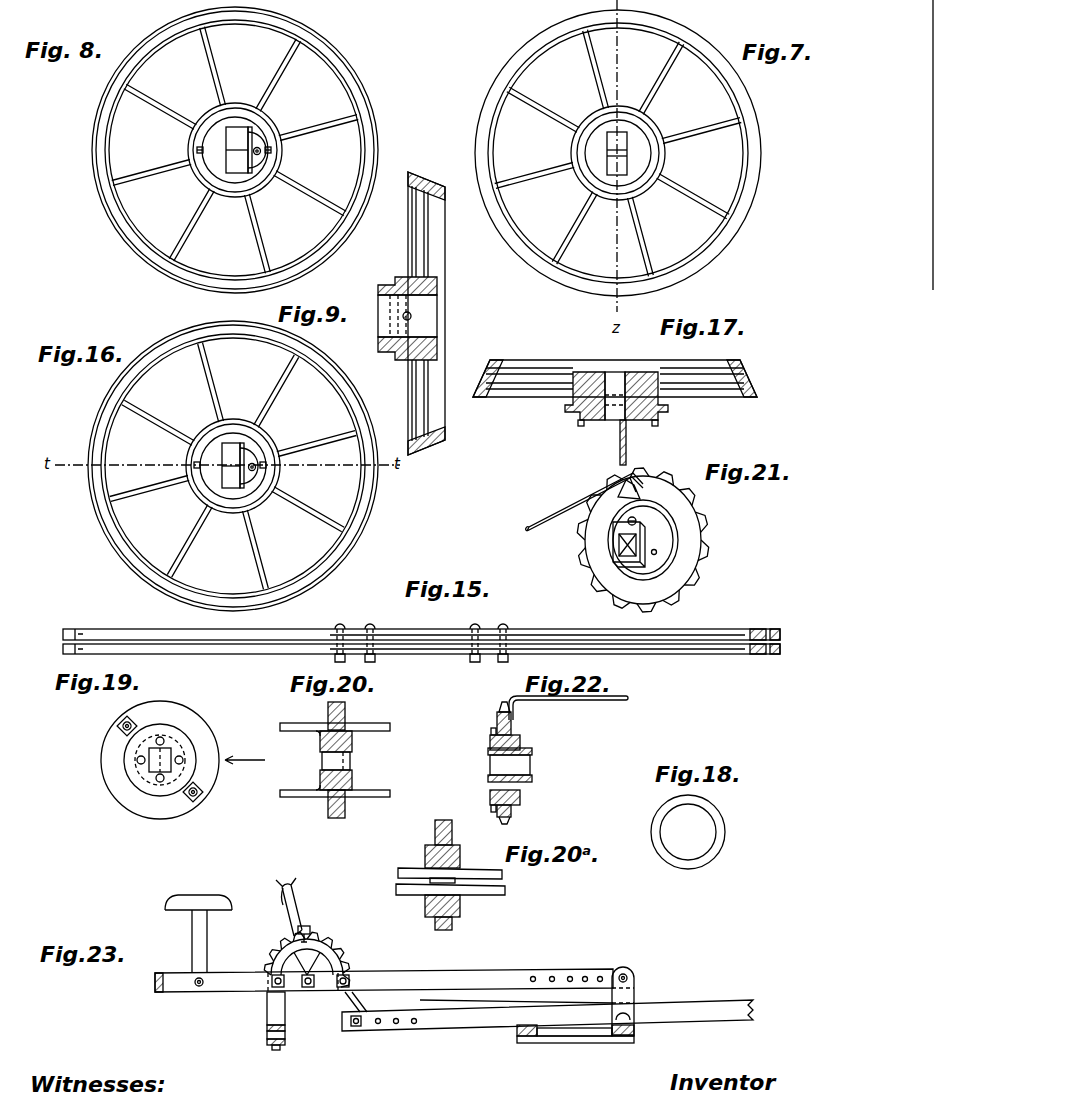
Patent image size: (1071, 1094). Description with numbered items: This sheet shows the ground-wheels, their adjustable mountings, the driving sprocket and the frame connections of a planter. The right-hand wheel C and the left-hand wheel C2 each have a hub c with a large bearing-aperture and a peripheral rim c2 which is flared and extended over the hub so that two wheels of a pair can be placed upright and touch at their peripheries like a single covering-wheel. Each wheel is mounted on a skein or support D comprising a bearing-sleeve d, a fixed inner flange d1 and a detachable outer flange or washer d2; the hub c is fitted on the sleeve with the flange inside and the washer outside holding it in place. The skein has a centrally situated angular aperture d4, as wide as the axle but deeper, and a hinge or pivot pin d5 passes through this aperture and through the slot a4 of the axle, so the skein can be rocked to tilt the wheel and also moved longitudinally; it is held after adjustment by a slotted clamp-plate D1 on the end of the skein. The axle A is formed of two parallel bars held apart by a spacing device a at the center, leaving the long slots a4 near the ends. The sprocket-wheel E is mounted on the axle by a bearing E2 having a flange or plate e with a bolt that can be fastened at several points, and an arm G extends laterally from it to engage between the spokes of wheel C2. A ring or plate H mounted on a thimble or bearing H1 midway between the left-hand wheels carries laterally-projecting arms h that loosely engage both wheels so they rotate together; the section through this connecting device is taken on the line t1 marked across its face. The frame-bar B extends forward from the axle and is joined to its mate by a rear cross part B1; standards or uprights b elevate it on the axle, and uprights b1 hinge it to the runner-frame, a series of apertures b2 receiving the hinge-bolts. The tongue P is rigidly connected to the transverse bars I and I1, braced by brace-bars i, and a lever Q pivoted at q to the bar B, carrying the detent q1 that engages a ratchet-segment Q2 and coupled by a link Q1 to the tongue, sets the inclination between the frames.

In FIG. 8, the right-hand wheel C is at (239, 150).
In FIG. 7, the right-hand wheel C is at (622, 153).
In FIG. 9, the right-hand wheel C is at (426, 304).
In FIG. 8, the hub c is at (196, 167).
In FIG. 7, the hub c is at (583, 180).
In FIG. 16, the hub c is at (200, 490).
In FIG. 9, the hub c is at (397, 367).
In FIG. 17, the hub c is at (615, 390).
In FIG. 8, the peripheral rim c2 is at (261, 190).
In FIG. 7, the peripheral rim c2 is at (648, 192).
In FIG. 16, the peripheral rim c2 is at (278, 480).
In FIG. 17, the peripheral rim c2 is at (663, 397).
In FIG. 16, the left-hand wheel C2 is at (236, 466).
In FIG. 8, the skein or support D is at (229, 174).
In FIG. 7, the skein or support D is at (608, 182).
In FIG. 16, the skein or support D is at (227, 493).
In FIG. 17, the skein or support D is at (603, 421).
In FIG. 8, the slotted clamp-plate D1 is at (250, 163).
In FIG. 16, the slotted clamp-plate D1 is at (237, 450).
In FIG. 17, the slotted clamp-plate D1 is at (628, 456).
In FIG. 9, the bearing-sleeve d is at (379, 298).
In FIG. 9, the fixed inner flange d1 is at (390, 341).
In FIG. 17, the fixed inner flange d1 is at (585, 372).
In FIG. 8, the detachable outer flange or washer d2 is at (200, 149).
In FIG. 16, the detachable outer flange or washer d2 is at (200, 447).
In FIG. 9, the detachable outer flange or washer d2 is at (395, 353).
In FIG. 17, the detachable outer flange or washer d2 is at (573, 410).
In FIG. 18, the detachable outer flange or washer d2 is at (688, 836).
In FIG. 8, the angular aperture d4 is at (253, 130).
In FIG. 7, the angular aperture d4 is at (607, 140).
In FIG. 16, the angular aperture d4 is at (245, 447).
In FIG. 9, the angular aperture d4 is at (386, 320).
In FIG. 17, the angular aperture d4 is at (613, 421).
In FIG. 8, the hinge or pivot pin d5 is at (232, 147).
In FIG. 7, the hinge or pivot pin d5 is at (625, 153).
In FIG. 16, the hinge or pivot pin d5 is at (230, 443).
In FIG. 9, the hinge or pivot pin d5 is at (411, 317).
In FIG. 17, the hinge or pivot pin d5 is at (613, 392).
In FIG. 21, the sprocket-wheel E is at (690, 503).
In FIG. 22, the sprocket-wheel E is at (520, 724).
In FIG. 21, the flange or plate e is at (613, 540).
In FIG. 22, the flange or plate e is at (532, 756).
In FIG. 22, the bearing E2 is at (527, 770).
In FIG. 21, the arm G is at (527, 529).
In FIG. 22, the arm G is at (628, 700).
In FIG. 15, the axle A is at (421, 630).
In FIG. 23, the axle A is at (254, 1058).
In FIG. 15, the spacing device a is at (438, 654).
In FIG. 15, the slot or passage-way a4 is at (243, 641).
In FIG. 23, the slot or passage-way a4 is at (286, 1036).
In FIG. 19, the ring or plate H is at (110, 746).
In FIG. 20, the ring or plate H is at (345, 808).
In FIG. 20A, the ring or plate H is at (453, 833).
In FIG. 20, the thimble or bearing H1 is at (352, 748).
In FIG. 20A, the thimble or bearing H1 is at (450, 918).
In FIG. 19, the laterally-projecting arms h is at (127, 718).
In FIG. 20, the laterally-projecting arms h is at (390, 724).
In FIG. 19, the bolt lugs t1 is at (148, 737).
In FIG. 23, the frame-bar B is at (475, 970).
In FIG. 23, the rear cross part B1 is at (155, 977).
In FIG. 23, the lever Q is at (283, 928).
In FIG. 23, the pawl pivot q1 is at (310, 932).
In FIG. 23, the ratchet-segment Q2 is at (320, 950).
In FIG. 23, the pivot q is at (316, 975).
In FIG. 23, the link Q1 is at (350, 1003).
In FIG. 23, the standard or upright b is at (286, 1006).
In FIG. 23, the upright b1 is at (634, 991).
In FIG. 23, the apertures b2 is at (553, 977).
In FIG. 23, the tongue P is at (414, 1025).
In FIG. 23, the transverse bar I is at (620, 1043).
In FIG. 23, the transverse bar I1 is at (527, 1043).
In FIG. 23, the brace-bar i is at (583, 1044).